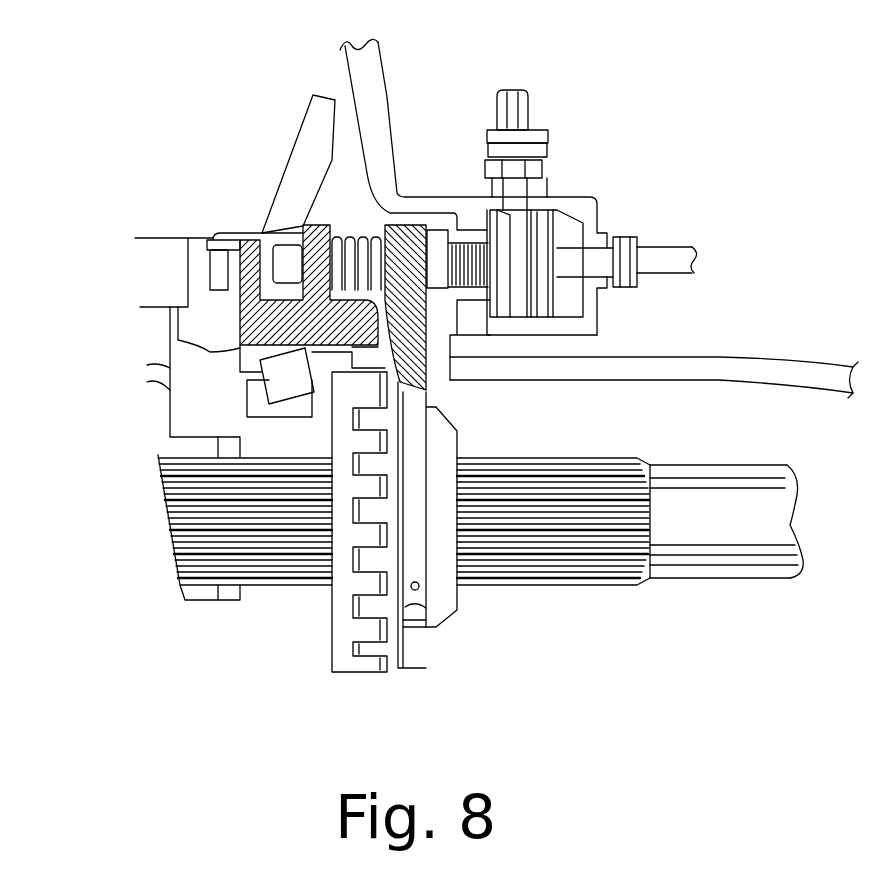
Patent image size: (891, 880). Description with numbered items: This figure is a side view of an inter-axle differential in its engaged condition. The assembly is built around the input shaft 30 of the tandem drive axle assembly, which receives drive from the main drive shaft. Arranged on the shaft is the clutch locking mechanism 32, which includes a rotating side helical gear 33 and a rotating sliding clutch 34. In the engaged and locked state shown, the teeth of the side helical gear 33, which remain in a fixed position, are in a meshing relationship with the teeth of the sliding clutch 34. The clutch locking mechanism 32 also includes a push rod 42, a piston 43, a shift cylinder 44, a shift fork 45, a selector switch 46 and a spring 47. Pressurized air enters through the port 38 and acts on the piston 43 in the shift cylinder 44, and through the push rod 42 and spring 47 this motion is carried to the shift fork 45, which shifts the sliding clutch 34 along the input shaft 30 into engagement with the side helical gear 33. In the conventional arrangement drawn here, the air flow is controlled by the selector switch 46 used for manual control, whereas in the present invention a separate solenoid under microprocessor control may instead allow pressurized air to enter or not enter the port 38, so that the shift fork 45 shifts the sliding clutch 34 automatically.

The input shaft 30 is at (716, 537).
The clutch locking mechanism 32 is at (648, 80).
The side helical gear 33 is at (338, 647).
The sliding clutch 34 is at (404, 654).
The port 38 is at (680, 275).
The push rod 42 is at (455, 212).
The piston 43 is at (598, 225).
The shift cylinder 44 is at (600, 228).
The shift fork 45 is at (403, 225).
The selector switch 46 is at (533, 130).
The spring 47 is at (343, 232).